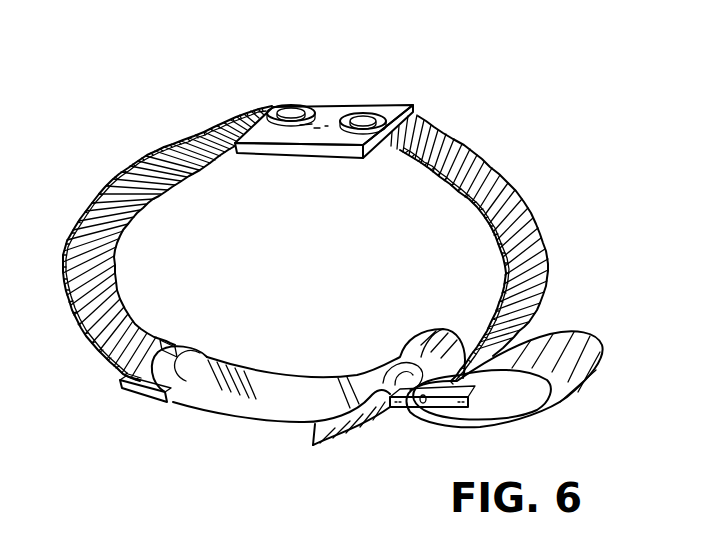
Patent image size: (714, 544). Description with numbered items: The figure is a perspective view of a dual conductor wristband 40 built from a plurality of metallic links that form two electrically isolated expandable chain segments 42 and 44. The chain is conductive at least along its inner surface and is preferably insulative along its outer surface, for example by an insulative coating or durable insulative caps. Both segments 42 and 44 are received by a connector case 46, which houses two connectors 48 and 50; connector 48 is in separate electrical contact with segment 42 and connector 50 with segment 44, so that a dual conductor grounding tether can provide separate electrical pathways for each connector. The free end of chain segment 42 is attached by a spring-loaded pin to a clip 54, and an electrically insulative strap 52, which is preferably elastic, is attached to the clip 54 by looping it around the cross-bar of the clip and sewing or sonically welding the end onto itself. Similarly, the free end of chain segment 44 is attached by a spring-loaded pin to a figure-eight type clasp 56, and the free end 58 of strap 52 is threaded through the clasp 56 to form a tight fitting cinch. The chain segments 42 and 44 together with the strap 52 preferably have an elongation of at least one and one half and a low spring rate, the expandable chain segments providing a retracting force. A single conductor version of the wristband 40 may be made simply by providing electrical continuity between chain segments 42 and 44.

The dual conductor wristband 40 is at (480, 138).
The expandable chain segment 42 is at (153, 157).
The expandable chain segment 44 is at (504, 180).
The connector case 46 is at (310, 153).
The connector 48 is at (313, 107).
The connector 50 is at (352, 100).
The electrically insulative strap 52 is at (260, 372).
The clip 54 is at (171, 408).
The clasp 56 is at (403, 410).
The free end 58 is at (313, 444).